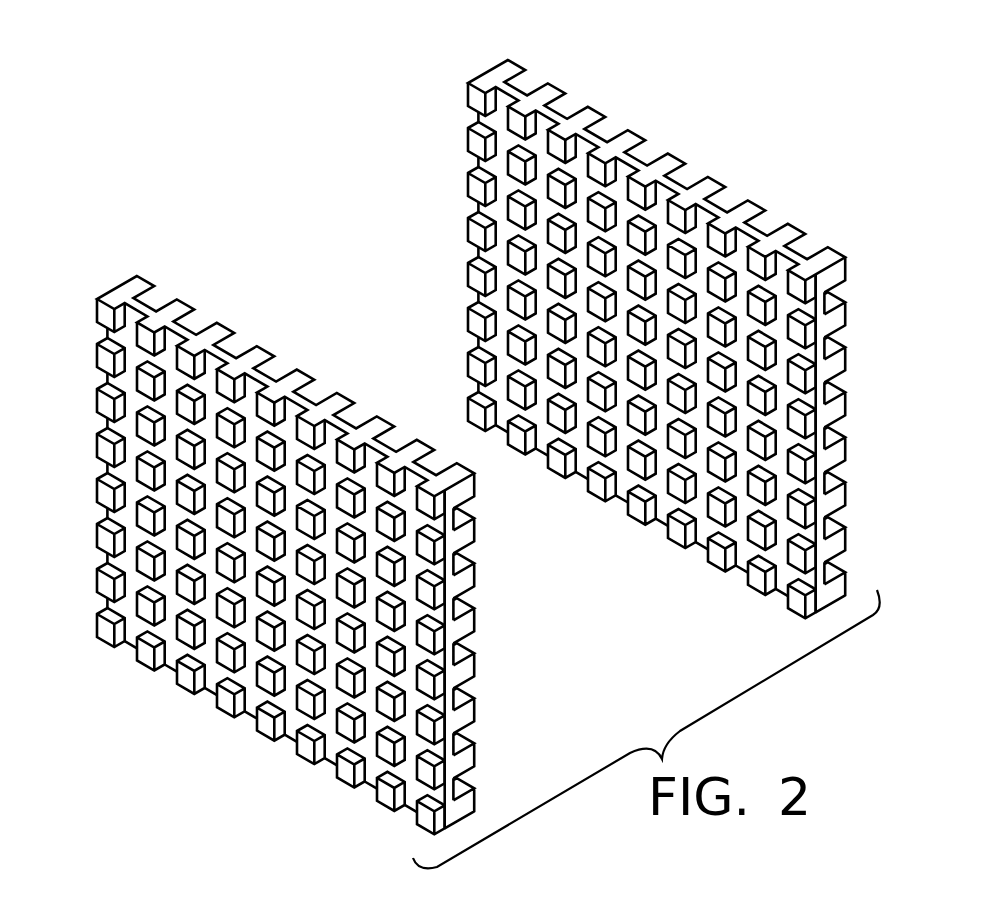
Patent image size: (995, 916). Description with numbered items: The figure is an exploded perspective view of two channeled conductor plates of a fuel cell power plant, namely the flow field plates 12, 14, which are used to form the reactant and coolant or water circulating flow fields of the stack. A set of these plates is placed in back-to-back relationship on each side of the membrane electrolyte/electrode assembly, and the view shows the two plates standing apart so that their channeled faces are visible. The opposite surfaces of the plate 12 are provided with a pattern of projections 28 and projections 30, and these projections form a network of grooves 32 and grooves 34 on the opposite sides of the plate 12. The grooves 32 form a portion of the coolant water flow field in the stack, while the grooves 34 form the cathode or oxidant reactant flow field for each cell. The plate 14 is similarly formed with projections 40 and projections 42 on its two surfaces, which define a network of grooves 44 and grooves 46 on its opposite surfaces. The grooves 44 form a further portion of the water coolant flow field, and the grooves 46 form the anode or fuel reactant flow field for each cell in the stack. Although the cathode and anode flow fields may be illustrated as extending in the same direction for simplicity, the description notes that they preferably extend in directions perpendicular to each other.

The flow field plate 12 is at (96, 279).
The flow field plate 14 is at (463, 63).
The projections 28 is at (476, 524).
The projections 30 is at (148, 381).
The grooves 32 is at (308, 392).
The grooves 34 is at (160, 497).
The projections 40 is at (518, 210).
The projections 42 is at (678, 158).
The grooves 44 is at (624, 450).
The grooves 46 is at (846, 433).